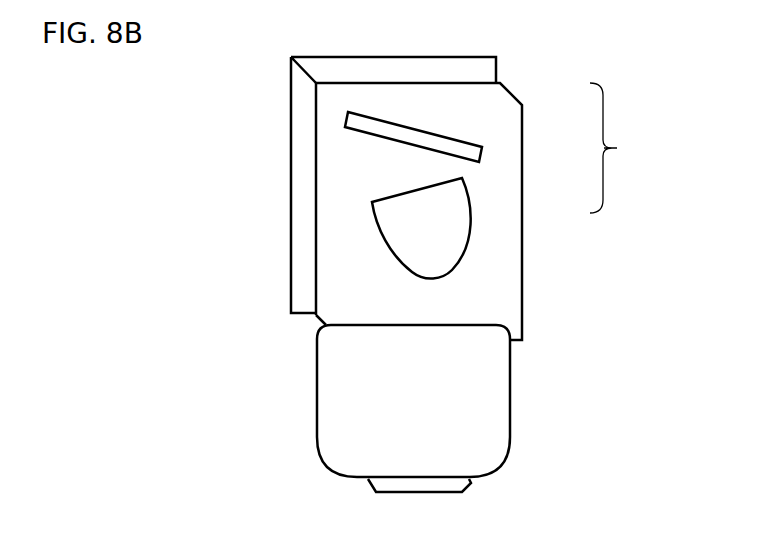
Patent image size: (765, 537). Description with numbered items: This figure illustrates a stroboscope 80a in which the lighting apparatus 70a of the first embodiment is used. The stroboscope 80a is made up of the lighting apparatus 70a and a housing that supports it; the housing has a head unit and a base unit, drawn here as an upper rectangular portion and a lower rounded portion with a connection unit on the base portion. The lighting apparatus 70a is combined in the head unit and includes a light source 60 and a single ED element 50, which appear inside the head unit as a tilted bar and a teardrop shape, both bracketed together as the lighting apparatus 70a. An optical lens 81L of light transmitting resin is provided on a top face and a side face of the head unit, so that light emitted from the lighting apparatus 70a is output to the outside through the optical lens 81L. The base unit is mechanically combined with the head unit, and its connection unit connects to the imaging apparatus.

The ED element 50 is at (476, 130).
The light source 60 is at (482, 213).
The lighting apparatus 70a is at (506, 181).
The optical lens 81L is at (268, 207).
The stroboscope 80a is at (566, 490).